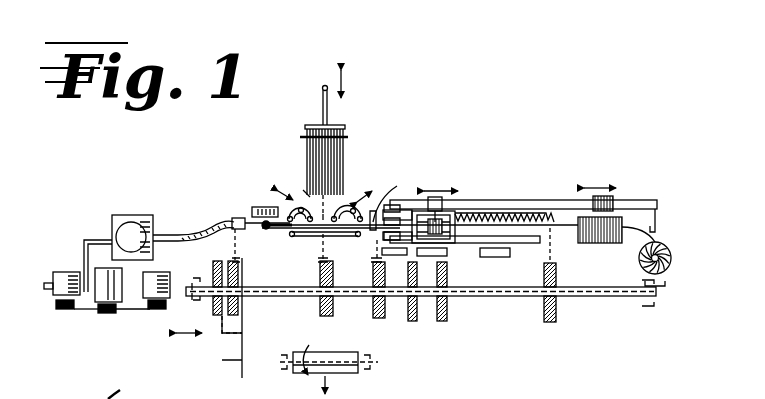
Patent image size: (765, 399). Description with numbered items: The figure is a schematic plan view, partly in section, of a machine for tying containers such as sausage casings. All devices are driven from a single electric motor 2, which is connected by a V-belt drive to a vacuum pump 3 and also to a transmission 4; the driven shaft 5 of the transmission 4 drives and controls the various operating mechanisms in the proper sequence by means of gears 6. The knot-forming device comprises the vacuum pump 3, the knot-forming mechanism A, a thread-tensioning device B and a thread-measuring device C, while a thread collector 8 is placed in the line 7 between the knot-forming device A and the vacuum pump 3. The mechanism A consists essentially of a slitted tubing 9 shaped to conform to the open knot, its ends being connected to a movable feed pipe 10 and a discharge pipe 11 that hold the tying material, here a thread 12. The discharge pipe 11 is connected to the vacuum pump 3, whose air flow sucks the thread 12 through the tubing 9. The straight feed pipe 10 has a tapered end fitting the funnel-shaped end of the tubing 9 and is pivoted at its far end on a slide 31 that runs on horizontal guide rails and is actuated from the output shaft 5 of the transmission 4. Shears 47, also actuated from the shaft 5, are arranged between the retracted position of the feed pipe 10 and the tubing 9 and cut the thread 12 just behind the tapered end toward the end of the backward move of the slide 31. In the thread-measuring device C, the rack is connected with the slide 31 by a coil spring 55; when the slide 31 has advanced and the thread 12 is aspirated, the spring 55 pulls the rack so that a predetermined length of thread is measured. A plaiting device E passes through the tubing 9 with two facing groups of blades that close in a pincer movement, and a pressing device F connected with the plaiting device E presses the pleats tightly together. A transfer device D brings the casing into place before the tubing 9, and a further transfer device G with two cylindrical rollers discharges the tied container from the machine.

The electric motor 2 is at (118, 302).
The vacuum pump 3 is at (60, 296).
The transmission 4 is at (165, 284).
The driven shaft 5 is at (505, 296).
The gears 6 is at (240, 306).
The line 7 is at (84, 244).
The thread collector 8 is at (133, 226).
The slitted tubing 9 is at (292, 216).
The feed pipe 10 is at (352, 235).
The discharge pipe 11 is at (273, 232).
The thread 12 is at (563, 229).
The slide 31 is at (448, 244).
The shears 47 is at (395, 195).
The coil spring 55 is at (517, 213).
The knot-forming mechanism A is at (327, 228).
The thread-tensioning device B is at (451, 188).
The thread-measuring device C is at (600, 188).
The transfer device D is at (240, 343).
The plaiting device E is at (335, 162).
The pressing device F is at (307, 192).
The transfer device G is at (348, 366).